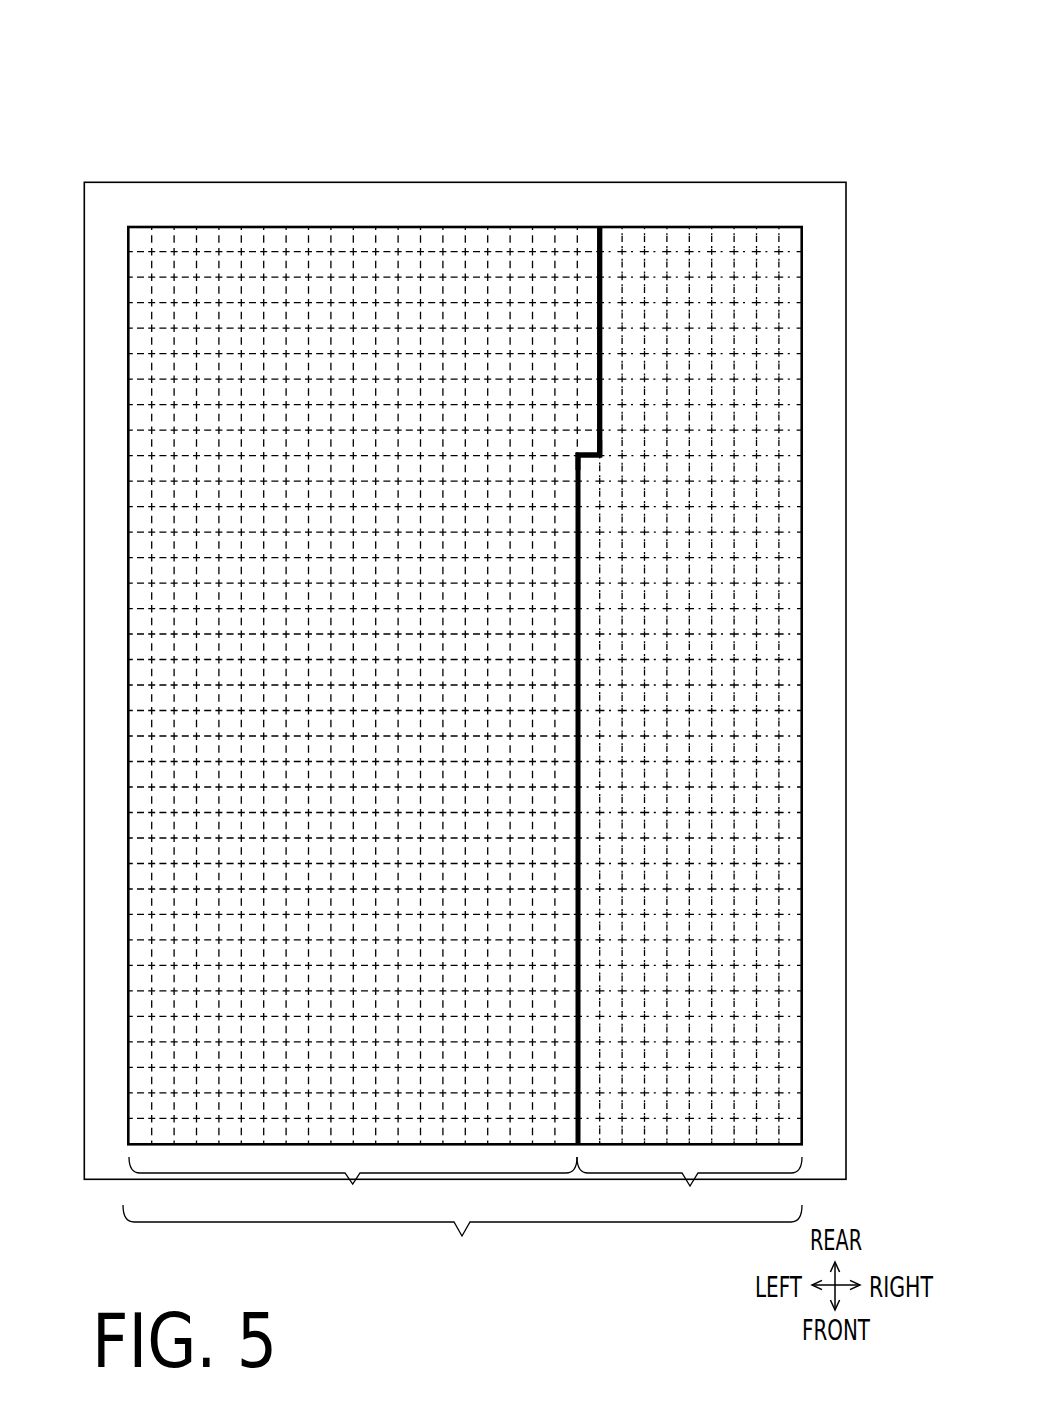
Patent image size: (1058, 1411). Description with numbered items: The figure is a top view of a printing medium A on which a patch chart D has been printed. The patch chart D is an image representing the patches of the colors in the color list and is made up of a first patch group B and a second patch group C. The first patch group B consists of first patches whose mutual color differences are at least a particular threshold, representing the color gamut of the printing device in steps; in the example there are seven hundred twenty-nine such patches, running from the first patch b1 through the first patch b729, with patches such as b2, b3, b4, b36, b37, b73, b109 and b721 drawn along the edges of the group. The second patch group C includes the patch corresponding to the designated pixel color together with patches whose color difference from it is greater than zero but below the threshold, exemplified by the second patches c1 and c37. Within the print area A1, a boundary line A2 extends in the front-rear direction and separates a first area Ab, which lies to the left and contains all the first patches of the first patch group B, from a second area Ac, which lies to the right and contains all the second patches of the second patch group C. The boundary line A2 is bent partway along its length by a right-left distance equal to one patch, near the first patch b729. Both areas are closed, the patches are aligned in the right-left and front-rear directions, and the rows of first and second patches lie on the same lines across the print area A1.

The printing medium A is at (495, 107).
The patch chart D is at (503, 195).
The first patch group B is at (390, 217).
The second patch group C is at (710, 203).
The first patch b1 is at (143, 232).
The first patch b37 is at (163, 235).
The first patch b73 is at (188, 233).
The first patch b109 is at (209, 235).
The first patch b2 is at (137, 263).
The first patch b3 is at (137, 288).
The first patch b4 is at (137, 313).
The first patch b36 is at (138, 1131).
The first patch b721 is at (593, 233).
The first patch b729 is at (592, 443).
The second patch c1 is at (615, 233).
The second patch c37 is at (643, 235).
The boundary line A2 is at (603, 233).
The first area Ab is at (353, 1187).
The second area Ac is at (689, 1187).
The print area A1 is at (462, 1236).